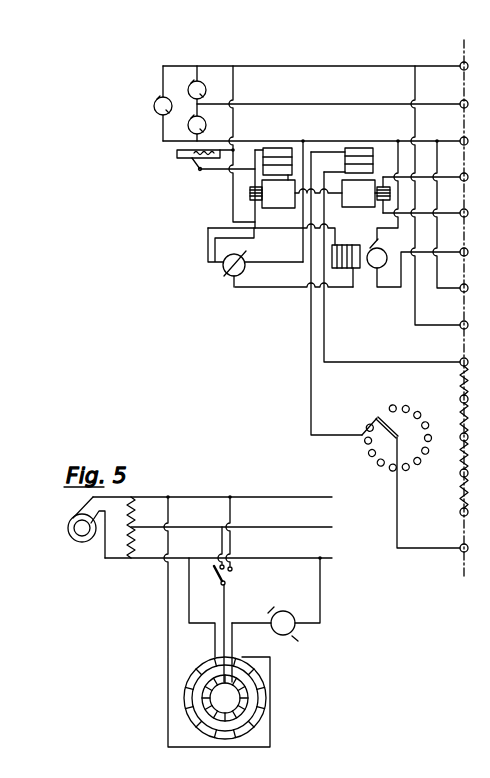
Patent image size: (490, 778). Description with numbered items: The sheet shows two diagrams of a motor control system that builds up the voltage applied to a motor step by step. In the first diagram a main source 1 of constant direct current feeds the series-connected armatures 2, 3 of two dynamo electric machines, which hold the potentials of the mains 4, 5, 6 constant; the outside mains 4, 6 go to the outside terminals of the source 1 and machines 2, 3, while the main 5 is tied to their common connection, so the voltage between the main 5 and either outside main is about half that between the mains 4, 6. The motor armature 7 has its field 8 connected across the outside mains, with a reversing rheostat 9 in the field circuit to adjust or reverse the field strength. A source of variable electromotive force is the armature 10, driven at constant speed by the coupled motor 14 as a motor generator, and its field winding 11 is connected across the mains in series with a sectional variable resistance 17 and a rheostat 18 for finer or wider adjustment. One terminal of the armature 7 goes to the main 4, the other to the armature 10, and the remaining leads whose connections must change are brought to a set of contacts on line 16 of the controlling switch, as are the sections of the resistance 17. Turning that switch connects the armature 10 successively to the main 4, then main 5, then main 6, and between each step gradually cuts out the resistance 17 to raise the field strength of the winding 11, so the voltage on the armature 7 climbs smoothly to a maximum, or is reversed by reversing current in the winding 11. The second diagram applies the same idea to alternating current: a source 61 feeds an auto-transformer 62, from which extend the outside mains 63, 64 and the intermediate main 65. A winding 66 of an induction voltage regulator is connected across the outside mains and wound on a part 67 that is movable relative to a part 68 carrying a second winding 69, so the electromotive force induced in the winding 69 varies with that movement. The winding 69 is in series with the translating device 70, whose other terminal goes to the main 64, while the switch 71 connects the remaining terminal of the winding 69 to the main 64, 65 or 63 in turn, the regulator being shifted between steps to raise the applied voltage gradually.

In FIG. 3, the main source of direct current energy 1 is at (149, 107).
In FIG. 3, the armature of dynamo electric machine 2 is at (191, 128).
In FIG. 3, the armature of dynamo electric machine 3 is at (201, 85).
In FIG. 3, the main 4 is at (311, 133).
In FIG. 3, the main 5 is at (328, 95).
In FIG. 3, the main 6 is at (311, 57).
In FIG. 3, the motor armature 7 is at (413, 214).
In FIG. 3, the motor field 8 is at (346, 266).
In FIG. 3, the reversing rheostat 9 is at (255, 257).
In FIG. 3, the armature of variable electromotive force source 10 is at (366, 195).
In FIG. 3, the field winding 11 is at (373, 159).
In FIG. 3, the motor 14 is at (260, 188).
In FIG. 3, the line of contacts 16 is at (464, 60).
In FIG. 3, the variable resistance 17 is at (453, 437).
In FIG. 3, the rheostat 18 is at (404, 476).
In FIG. 5, the alternating current source 61 is at (74, 527).
In FIG. 5, the auto-transformer 62 is at (121, 527).
In FIG. 5, the outside main 63 is at (212, 488).
In FIG. 5, the outside main 64 is at (218, 549).
In FIG. 5, the main 65 is at (231, 518).
In FIG. 5, the winding of voltage regulator 66 is at (201, 697).
In FIG. 5, the part of voltage regulator 67 is at (223, 683).
In FIG. 5, the part of voltage regulator 68 is at (225, 698).
In FIG. 5, the second winding 69 is at (245, 697).
In FIG. 5, the translating device 70 is at (287, 618).
In FIG. 5, the switch 71 is at (232, 543).